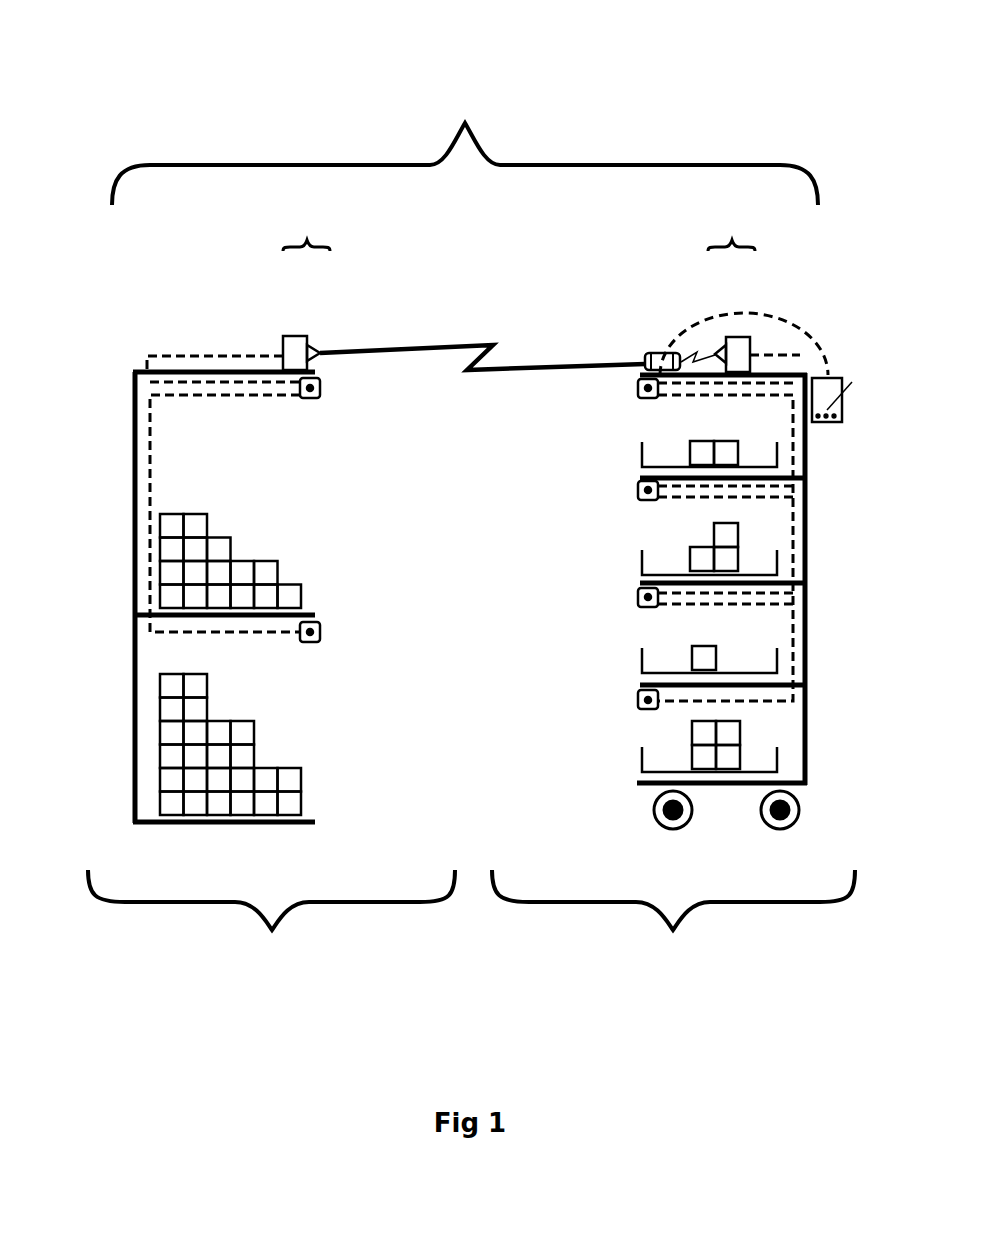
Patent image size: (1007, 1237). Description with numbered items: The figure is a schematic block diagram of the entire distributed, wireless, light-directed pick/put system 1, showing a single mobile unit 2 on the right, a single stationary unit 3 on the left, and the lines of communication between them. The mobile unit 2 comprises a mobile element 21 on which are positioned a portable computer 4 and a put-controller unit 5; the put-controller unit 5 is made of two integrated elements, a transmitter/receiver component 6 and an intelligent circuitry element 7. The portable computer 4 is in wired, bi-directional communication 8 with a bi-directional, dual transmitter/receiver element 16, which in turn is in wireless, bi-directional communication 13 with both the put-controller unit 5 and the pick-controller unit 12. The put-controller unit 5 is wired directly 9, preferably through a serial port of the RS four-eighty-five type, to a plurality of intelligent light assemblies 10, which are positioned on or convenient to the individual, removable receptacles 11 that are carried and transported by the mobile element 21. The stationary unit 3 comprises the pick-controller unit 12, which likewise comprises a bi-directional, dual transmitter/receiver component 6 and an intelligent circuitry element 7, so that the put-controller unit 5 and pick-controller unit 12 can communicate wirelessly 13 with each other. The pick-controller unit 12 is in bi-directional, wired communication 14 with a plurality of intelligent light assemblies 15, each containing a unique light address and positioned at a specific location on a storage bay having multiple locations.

The pick/put system 1 is at (465, 104).
The mobile unit 2 is at (697, 699).
The stationary unit 3 is at (272, 948).
The portable computer 4 is at (845, 402).
The put-controller unit 5 is at (732, 222).
The transmitter/receiver component 6 is at (321, 345).
The intelligent circuitry element 7 is at (296, 336).
The wired, bi-directional communication 8 is at (803, 340).
The wired connection 9 is at (778, 355).
The intelligent light assemblies 10 is at (636, 388).
The removable receptacles 11 is at (640, 452).
The pick-controller unit 12 is at (307, 222).
The wireless, bi-directional communication 13 is at (465, 345).
The wired communication 14 is at (182, 356).
The intelligent light assemblies 15 is at (322, 388).
The dual transmitter/receiver element 16 is at (645, 357).
The mobile element 21 is at (808, 532).